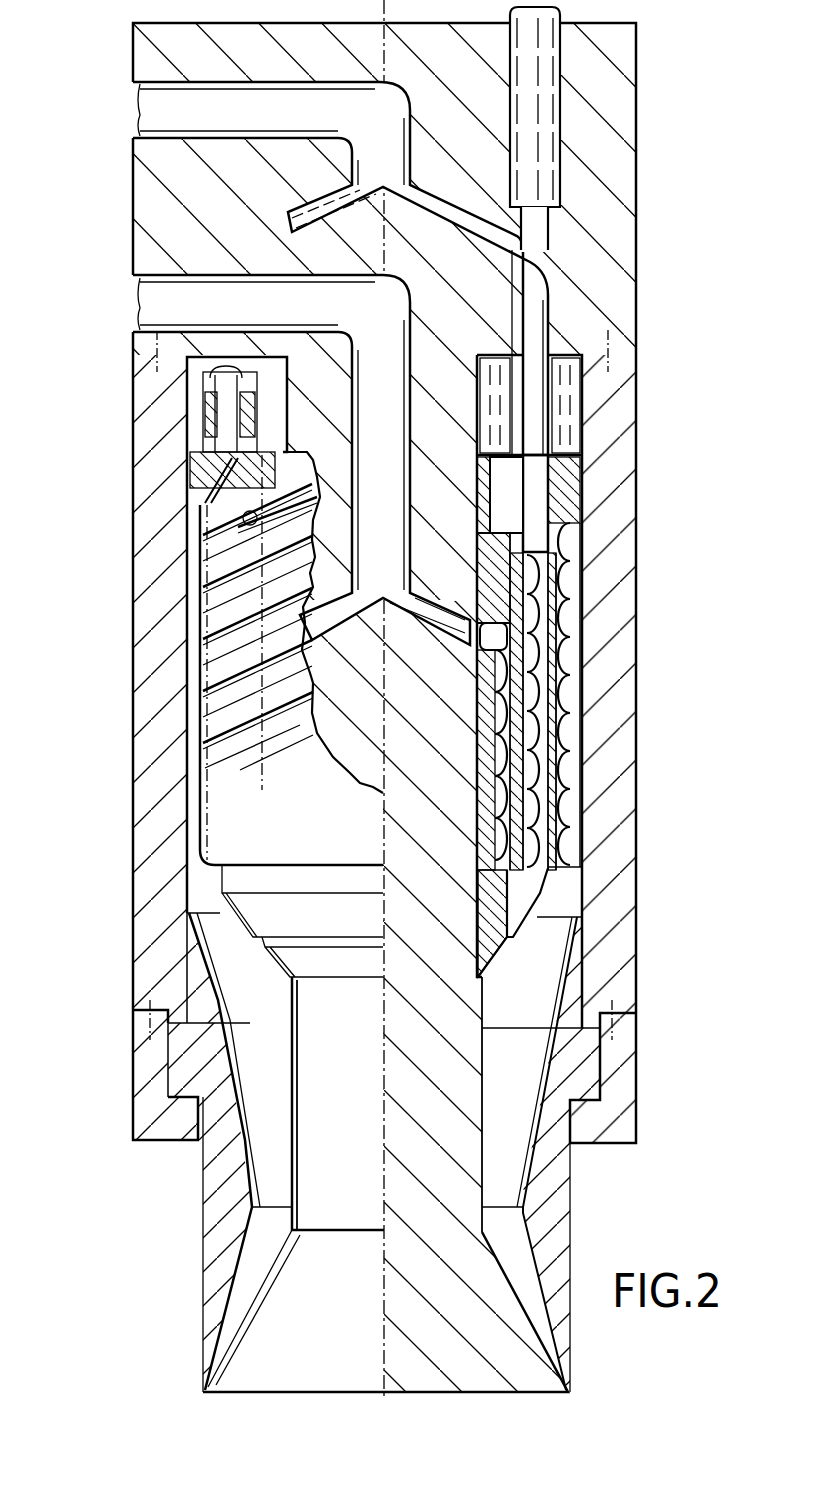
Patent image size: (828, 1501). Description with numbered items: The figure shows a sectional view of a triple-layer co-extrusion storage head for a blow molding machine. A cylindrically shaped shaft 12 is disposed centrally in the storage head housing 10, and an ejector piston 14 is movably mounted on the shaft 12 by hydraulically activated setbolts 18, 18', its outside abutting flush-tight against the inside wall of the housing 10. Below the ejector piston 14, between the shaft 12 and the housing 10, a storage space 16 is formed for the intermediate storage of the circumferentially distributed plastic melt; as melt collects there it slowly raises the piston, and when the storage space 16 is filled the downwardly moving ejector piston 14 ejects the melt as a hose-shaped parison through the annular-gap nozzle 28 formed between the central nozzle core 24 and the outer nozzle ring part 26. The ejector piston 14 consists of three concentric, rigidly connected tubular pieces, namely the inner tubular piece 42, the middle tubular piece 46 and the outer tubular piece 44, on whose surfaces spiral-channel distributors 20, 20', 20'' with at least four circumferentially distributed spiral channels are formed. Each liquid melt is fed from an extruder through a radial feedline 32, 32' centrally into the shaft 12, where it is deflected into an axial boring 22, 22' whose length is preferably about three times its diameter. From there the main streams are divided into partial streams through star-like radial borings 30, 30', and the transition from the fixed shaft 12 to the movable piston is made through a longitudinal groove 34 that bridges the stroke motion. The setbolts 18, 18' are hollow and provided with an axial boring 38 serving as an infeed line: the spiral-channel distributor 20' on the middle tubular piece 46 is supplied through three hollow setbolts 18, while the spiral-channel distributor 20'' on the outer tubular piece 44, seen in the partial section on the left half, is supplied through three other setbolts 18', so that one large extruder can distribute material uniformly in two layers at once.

The storage head housing 10 is at (160, 778).
The shaft 12 is at (425, 1108).
The ejector piston 14 is at (260, 820).
The storage space 16 is at (537, 958).
The setbolt 18 is at (610, 107).
The setbolt 18' is at (161, 409).
The spiral-channel distributor 20 is at (604, 701).
The spiral-channel distributor 20' is at (599, 701).
The spiral-channel distributor 20'' is at (387, 675).
The axial boring 22 is at (534, 114).
The axial boring 22' is at (547, 426).
The nozzle core 24 is at (330, 1324).
The nozzle ring part 26 is at (218, 1247).
The annular-gap nozzle 28 is at (230, 1312).
The radial boring 30 is at (225, 200).
The radial boring 30' is at (427, 653).
The radial feedline 32 is at (305, 268).
The radial feedline 32' is at (266, 460).
The longitudinal groove 34 is at (518, 317).
The axial boring 38 is at (538, 402).
The inner tubular piece 42 is at (490, 893).
The outer tubular piece 44 is at (567, 795).
The middle tubular piece 46 is at (527, 832).